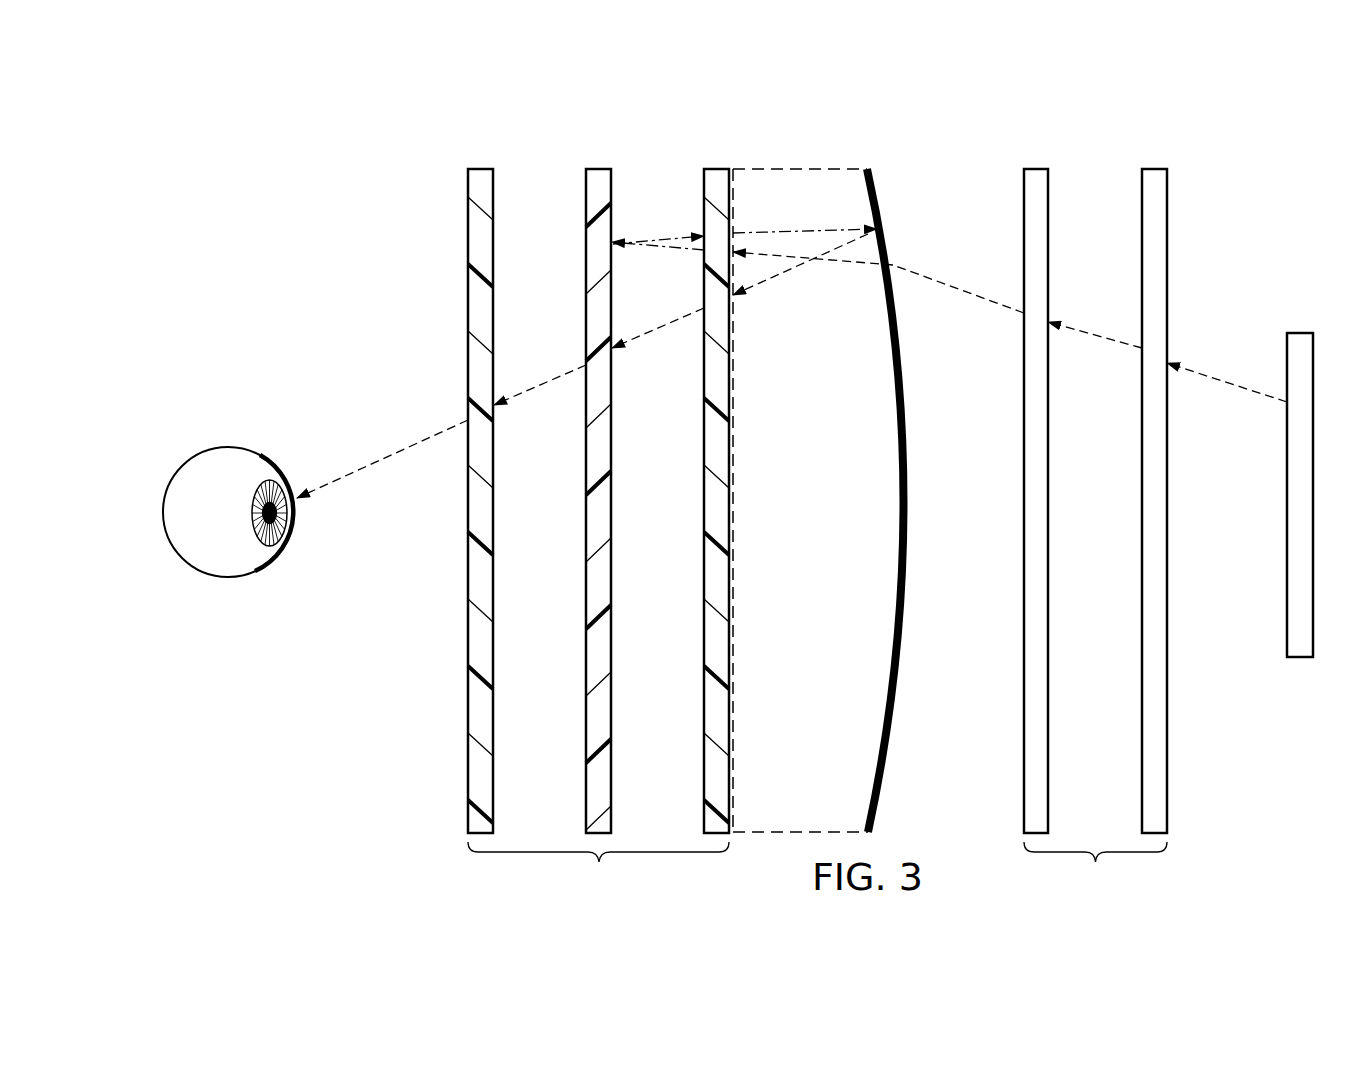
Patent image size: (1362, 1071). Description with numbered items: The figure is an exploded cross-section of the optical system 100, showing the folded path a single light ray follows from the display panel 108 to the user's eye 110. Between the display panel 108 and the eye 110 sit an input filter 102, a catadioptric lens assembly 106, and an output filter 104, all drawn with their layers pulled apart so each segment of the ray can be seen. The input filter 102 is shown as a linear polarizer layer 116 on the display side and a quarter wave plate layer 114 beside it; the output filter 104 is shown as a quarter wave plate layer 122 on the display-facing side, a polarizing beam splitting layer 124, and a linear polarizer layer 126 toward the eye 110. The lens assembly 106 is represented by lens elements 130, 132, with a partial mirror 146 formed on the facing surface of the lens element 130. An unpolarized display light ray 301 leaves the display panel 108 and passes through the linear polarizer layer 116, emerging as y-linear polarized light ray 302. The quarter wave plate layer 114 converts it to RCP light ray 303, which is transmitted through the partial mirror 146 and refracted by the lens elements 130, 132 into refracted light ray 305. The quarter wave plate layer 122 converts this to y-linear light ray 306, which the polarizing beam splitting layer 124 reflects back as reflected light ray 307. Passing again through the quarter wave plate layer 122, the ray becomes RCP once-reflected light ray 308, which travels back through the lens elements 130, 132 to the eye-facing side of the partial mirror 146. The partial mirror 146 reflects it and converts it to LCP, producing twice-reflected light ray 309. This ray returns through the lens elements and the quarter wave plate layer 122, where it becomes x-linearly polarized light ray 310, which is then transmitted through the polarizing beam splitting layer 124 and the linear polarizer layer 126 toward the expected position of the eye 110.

The optical system 100 is at (350, 147).
The input filter 102 is at (1110, 500).
The output filter 104 is at (592, 500).
The catadioptric lens assembly 106 is at (787, 157).
The display panel 108 is at (1300, 333).
The user's eye 110 is at (228, 448).
The quarter wave plate layer 114 is at (1036, 168).
The linear polarizer layer 116 is at (1155, 168).
The quarter wave plate layer 122 is at (718, 168).
The polarizing beam splitting layer 124 is at (598, 168).
The linear polarizer layer 126 is at (481, 168).
The lens element 130 is at (803, 500).
The lens element 132 is at (862, 598).
The partial mirror 146 is at (879, 198).
The display light ray 301 is at (1230, 383).
The y-linear polarized light ray 302 is at (1096, 335).
The RCP light ray 303 is at (953, 290).
The refracted light ray 305 is at (843, 263).
The y-linear polarized light ray 306 is at (643, 248).
The reflected light ray 307 is at (675, 236).
The once-reflected light ray 308 is at (830, 229).
The twice-reflected light ray 309 is at (781, 278).
The x-linearly polarized light ray 310 is at (665, 326).